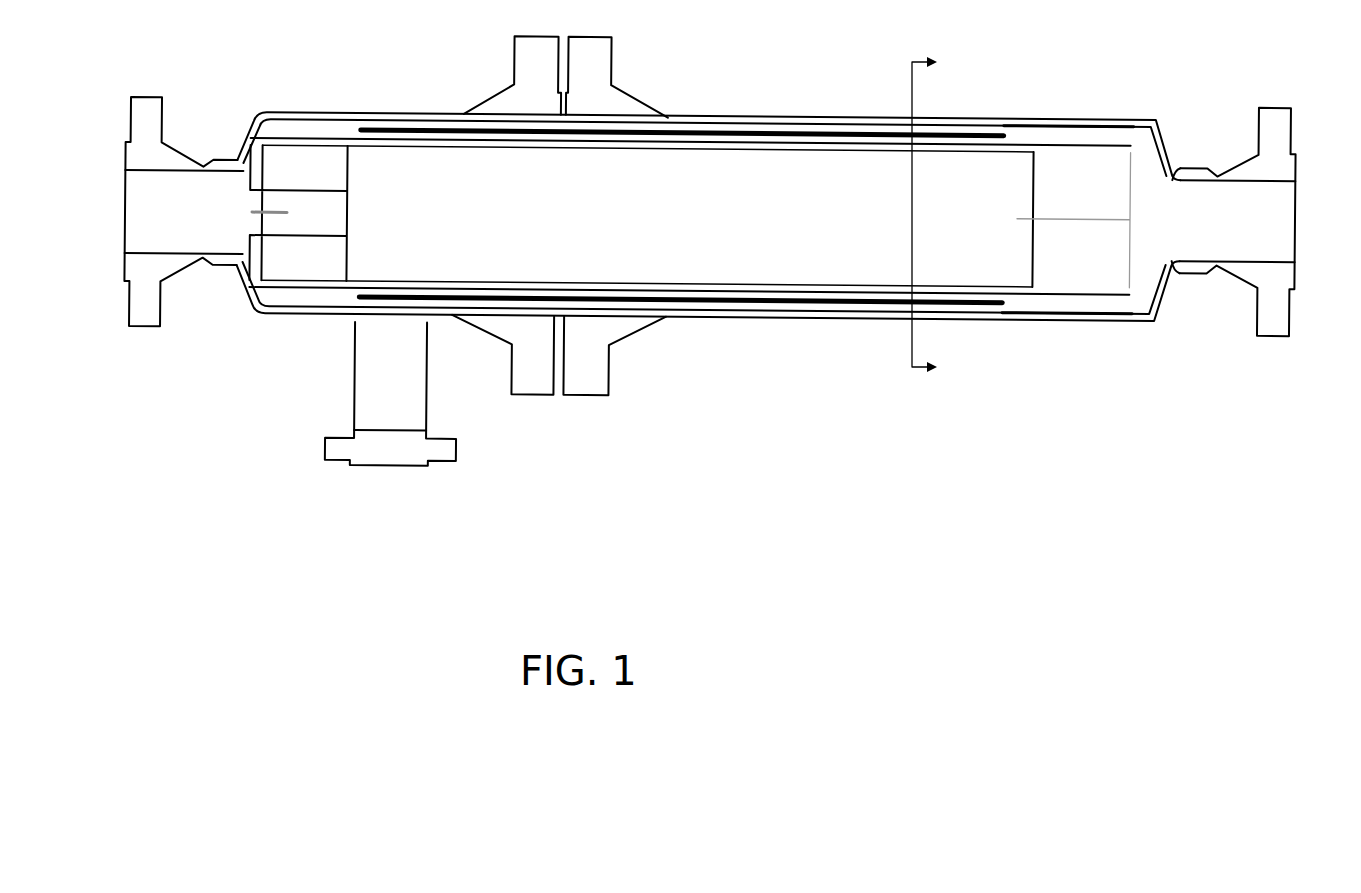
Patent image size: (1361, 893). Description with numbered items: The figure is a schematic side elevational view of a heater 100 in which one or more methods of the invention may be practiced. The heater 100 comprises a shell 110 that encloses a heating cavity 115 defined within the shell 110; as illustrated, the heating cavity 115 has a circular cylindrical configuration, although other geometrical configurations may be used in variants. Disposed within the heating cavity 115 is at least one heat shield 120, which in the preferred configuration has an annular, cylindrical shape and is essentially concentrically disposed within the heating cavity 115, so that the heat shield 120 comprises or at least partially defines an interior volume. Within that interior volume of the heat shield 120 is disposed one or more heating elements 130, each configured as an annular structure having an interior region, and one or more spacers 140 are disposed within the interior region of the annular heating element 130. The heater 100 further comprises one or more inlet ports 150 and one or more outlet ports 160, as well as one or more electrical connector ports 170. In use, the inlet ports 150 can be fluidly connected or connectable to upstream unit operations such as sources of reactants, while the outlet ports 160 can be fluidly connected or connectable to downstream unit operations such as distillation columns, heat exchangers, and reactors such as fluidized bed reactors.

The heater 100 is at (705, 299).
The shell 110 is at (838, 323).
The heating cavity 115 is at (320, 163).
The heat shield 120 is at (750, 308).
The heating element 130 is at (795, 140).
The spacer 140 is at (703, 263).
The inlet port 150 is at (125, 212).
The outlet port 160 is at (1296, 218).
The electrical connector port 170 is at (392, 467).